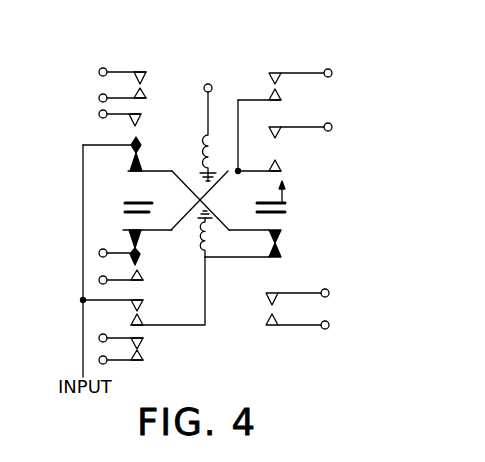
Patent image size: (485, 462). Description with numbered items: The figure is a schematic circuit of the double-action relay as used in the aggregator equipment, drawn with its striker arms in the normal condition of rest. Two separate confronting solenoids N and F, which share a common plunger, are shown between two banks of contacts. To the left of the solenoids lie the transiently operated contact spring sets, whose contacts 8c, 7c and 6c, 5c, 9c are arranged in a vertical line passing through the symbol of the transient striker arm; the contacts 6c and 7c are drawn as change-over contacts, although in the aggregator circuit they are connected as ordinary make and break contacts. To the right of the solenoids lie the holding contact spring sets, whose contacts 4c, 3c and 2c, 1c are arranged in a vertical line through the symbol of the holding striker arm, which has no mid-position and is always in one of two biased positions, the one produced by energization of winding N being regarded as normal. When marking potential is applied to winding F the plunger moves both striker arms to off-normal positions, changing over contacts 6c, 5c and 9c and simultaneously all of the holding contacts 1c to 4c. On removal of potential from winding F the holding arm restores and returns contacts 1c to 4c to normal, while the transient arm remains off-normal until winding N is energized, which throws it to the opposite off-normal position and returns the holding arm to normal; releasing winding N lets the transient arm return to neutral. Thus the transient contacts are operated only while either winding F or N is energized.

The holding contact 1c is at (288, 309).
The holding contact 2c is at (255, 243).
The holding contact 3c is at (285, 147).
The holding contact 4c is at (284, 121).
The transiently operated contact 5c is at (144, 291).
The change-over contact 6c is at (135, 257).
The change-over contact 7c is at (127, 154).
The transiently operated contact 8c is at (133, 97).
The transiently operated contact 9c is at (133, 349).
The solenoid N is at (202, 132).
The solenoid F is at (199, 234).